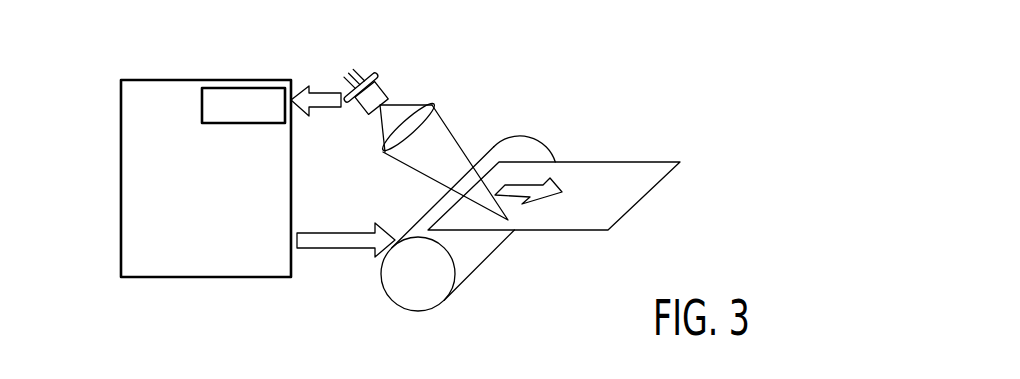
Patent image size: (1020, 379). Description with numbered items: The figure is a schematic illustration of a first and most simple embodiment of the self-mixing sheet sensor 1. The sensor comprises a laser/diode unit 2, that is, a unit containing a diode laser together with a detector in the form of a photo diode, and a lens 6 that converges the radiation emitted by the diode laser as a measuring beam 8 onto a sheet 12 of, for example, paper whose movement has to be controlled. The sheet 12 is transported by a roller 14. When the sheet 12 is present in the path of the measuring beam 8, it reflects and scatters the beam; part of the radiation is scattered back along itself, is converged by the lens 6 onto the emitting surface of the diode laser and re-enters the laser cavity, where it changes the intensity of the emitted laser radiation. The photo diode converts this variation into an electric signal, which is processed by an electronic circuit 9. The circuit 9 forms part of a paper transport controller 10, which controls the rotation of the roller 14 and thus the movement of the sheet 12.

The self-mixing sheet sensor 1 is at (521, 18).
The laser/diode unit 2 is at (386, 85).
The lens 6 is at (431, 106).
The measuring beam 8 is at (438, 147).
The electronic circuit 9 is at (235, 100).
The paper transport controller 10 is at (133, 190).
The sheet 12 is at (603, 177).
The roller 14 is at (470, 252).